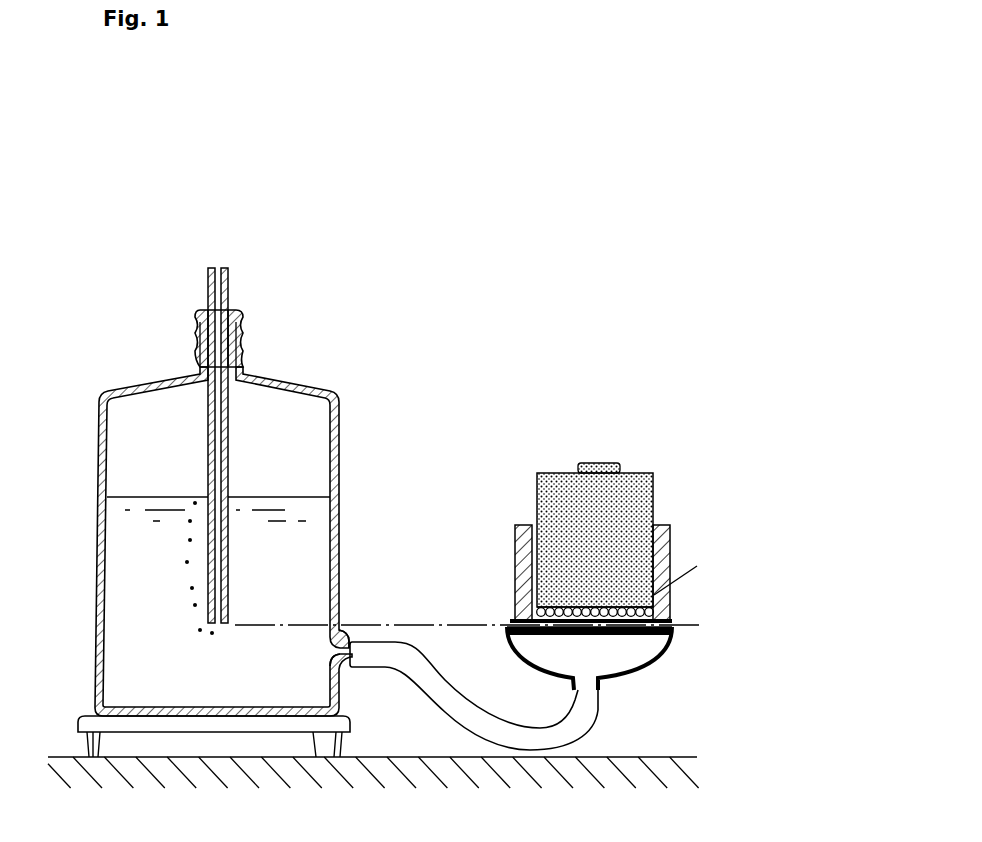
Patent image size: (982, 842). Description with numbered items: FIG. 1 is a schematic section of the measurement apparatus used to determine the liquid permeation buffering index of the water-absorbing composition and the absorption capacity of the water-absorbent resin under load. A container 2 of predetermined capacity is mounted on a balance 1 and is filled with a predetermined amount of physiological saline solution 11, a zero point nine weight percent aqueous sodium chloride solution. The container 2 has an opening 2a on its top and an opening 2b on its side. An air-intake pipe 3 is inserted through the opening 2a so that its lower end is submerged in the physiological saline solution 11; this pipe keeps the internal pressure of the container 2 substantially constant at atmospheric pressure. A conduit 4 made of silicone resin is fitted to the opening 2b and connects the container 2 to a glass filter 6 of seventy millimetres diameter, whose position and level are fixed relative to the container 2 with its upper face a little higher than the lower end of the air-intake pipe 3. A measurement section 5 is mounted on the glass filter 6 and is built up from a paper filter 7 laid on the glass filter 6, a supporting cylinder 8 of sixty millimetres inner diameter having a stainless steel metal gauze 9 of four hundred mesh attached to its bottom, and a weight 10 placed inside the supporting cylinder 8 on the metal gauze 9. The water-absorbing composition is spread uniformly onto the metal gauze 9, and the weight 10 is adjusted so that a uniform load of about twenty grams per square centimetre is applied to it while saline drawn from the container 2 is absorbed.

The balance 1 is at (208, 757).
The container 2 is at (343, 445).
The opening 2a is at (242, 330).
The opening 2b is at (345, 643).
The air-intake pipe 3 is at (228, 283).
The conduit 4 is at (430, 677).
The measurement section 5 is at (672, 522).
The glass filter 6 is at (652, 633).
The paper filter 7 is at (667, 618).
The supporting cylinder 8 is at (517, 548).
The metal gauze 9 is at (527, 613).
The weight 10 is at (630, 512).
The physiological saline solution 11 is at (135, 573).